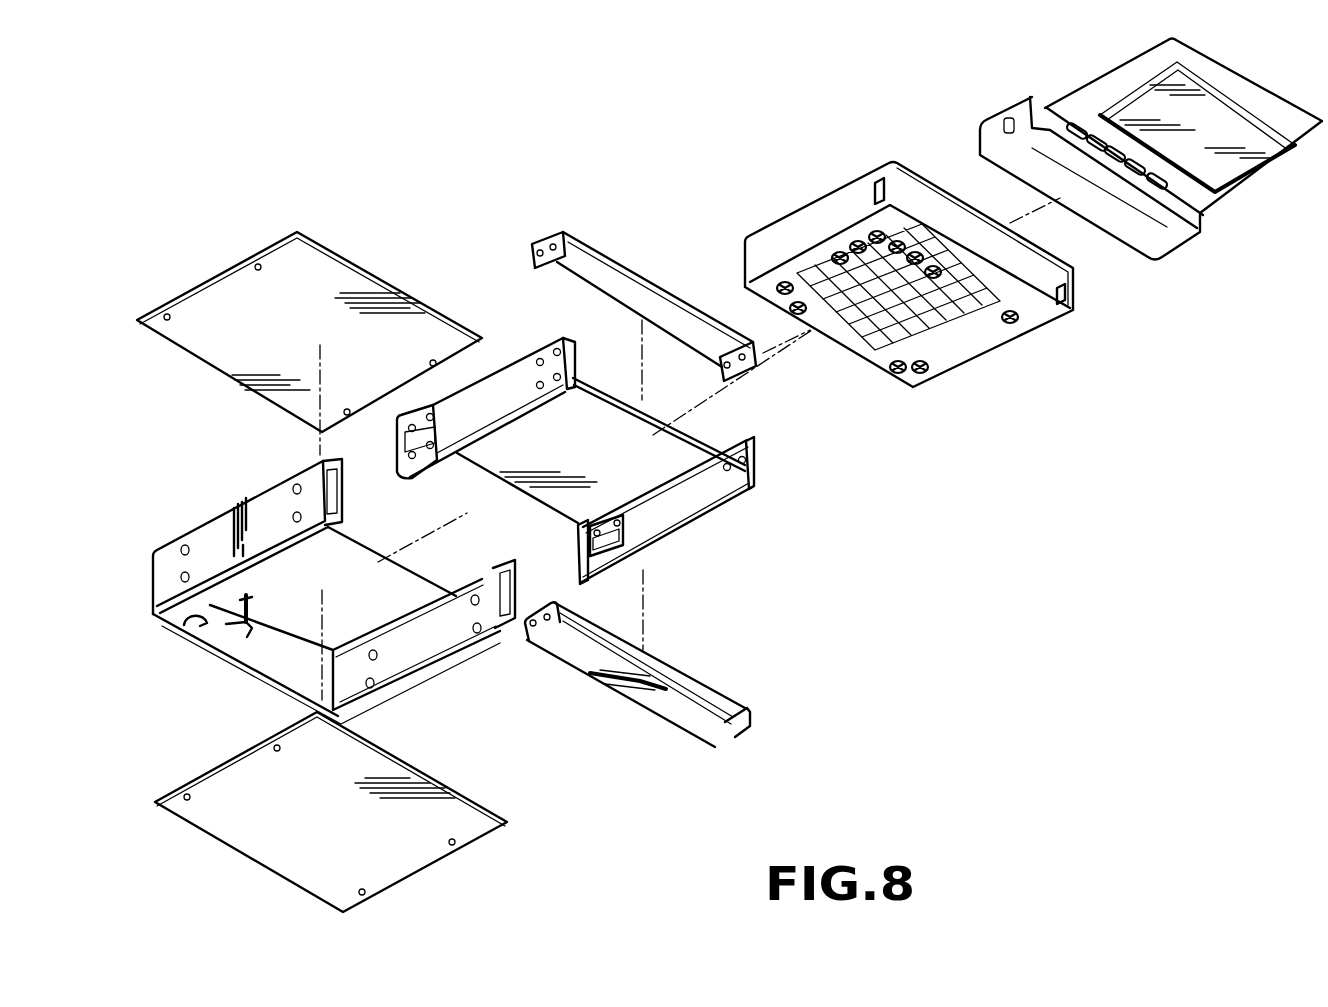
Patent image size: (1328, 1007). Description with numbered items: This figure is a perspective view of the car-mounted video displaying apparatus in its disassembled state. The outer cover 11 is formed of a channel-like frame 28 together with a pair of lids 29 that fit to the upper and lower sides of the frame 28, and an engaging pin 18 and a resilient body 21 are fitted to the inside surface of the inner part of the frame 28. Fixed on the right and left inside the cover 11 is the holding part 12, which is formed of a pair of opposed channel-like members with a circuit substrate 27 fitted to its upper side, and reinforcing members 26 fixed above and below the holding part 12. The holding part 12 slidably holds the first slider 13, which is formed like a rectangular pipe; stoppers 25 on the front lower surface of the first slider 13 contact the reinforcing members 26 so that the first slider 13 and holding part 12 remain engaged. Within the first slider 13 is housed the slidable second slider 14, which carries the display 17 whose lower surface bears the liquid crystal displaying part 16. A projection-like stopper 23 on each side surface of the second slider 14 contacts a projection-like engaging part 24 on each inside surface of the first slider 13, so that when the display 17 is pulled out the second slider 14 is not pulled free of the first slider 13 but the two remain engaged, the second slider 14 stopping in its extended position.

The cover 11 is at (307, 588).
The holding part 12 is at (513, 375).
The first slider 13 is at (939, 275).
The second slider 14 is at (1151, 187).
The liquid crystal displaying part 16 is at (1235, 167).
The display 17 is at (1258, 92).
The engaging pin 18 is at (178, 627).
The resilient body 21 is at (253, 593).
The stopper 23 is at (1008, 117).
The engaging part 24 is at (877, 182).
The stopper 25 is at (795, 308).
The reinforcing member 26 is at (602, 267).
The circuit substrate 27 is at (682, 433).
The frame 28 is at (162, 568).
The lid 29 is at (208, 297).